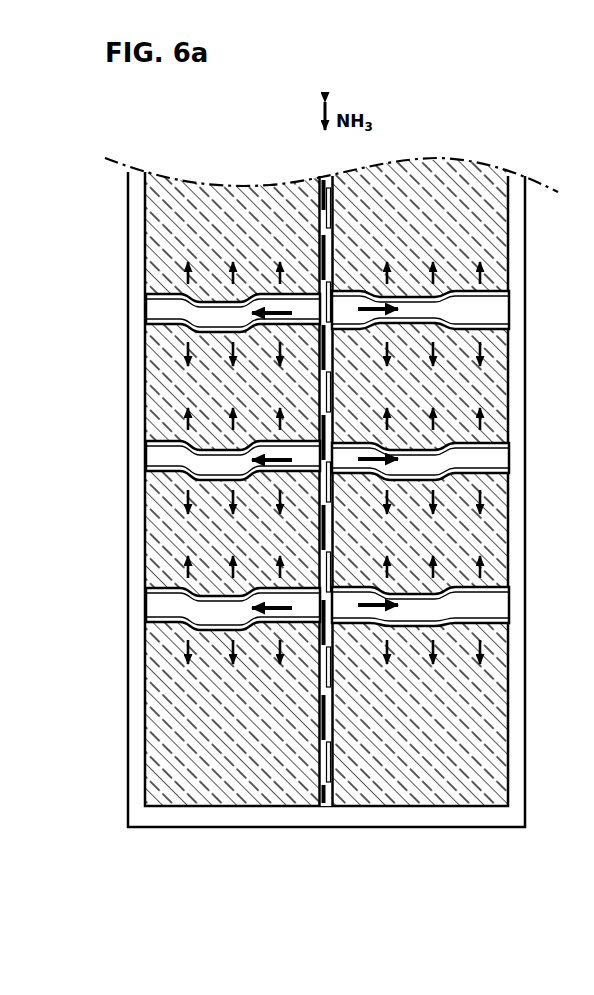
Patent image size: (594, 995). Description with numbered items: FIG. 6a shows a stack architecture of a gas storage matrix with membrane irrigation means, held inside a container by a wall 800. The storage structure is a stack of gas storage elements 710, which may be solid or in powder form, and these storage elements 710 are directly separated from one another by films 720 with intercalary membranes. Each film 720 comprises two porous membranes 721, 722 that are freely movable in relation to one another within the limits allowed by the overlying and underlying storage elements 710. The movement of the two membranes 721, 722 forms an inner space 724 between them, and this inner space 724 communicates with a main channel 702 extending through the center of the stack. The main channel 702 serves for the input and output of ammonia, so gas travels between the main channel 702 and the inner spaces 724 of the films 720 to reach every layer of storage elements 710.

The main channel 702 is at (330, 232).
The gas storage element 710 is at (200, 213).
The film 720 is at (205, 297).
The porous membrane 721 is at (160, 287).
The porous membrane 722 is at (160, 337).
The inner space 724 is at (308, 303).
The wall 800 is at (135, 735).